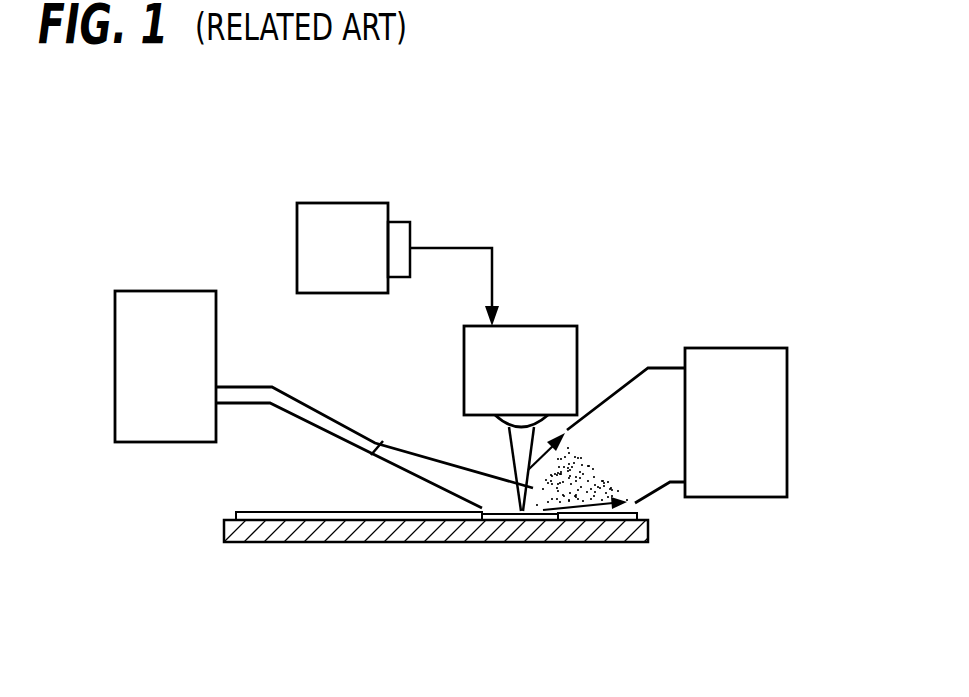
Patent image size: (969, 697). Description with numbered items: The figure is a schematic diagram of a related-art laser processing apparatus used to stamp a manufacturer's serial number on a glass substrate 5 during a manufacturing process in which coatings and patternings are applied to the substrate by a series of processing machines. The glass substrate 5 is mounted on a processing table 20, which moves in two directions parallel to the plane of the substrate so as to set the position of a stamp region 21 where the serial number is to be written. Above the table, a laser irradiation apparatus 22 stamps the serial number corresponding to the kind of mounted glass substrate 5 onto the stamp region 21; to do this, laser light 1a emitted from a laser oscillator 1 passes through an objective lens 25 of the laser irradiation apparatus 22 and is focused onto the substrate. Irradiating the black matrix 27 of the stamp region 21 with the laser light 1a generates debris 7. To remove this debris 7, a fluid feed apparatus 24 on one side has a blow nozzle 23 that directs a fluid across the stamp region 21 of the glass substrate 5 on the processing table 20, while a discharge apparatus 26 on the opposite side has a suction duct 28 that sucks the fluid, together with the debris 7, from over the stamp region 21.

The laser oscillator 1 is at (334, 203).
The laser light 1a is at (509, 456).
The glass substrate 5 is at (648, 527).
The debris 7 is at (582, 480).
The processing table 20 is at (492, 528).
The stamp region 21 is at (500, 510).
The laser irradiation apparatus 22 is at (548, 326).
The blow nozzle 23 is at (312, 401).
The fluid feed apparatus 24 is at (147, 291).
The objective lens 25 is at (527, 412).
The discharge apparatus 26 is at (787, 380).
The black matrix 27 is at (236, 513).
The suction duct 28 is at (633, 378).